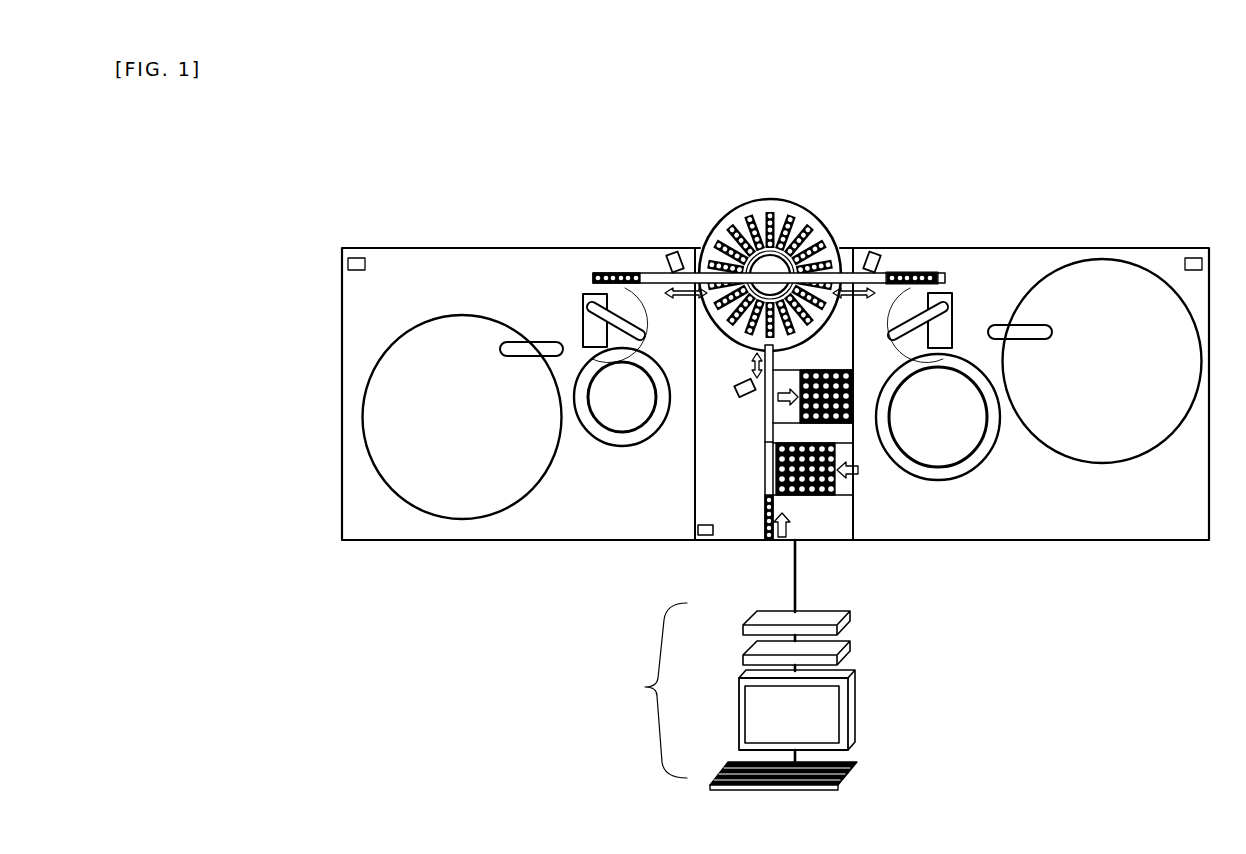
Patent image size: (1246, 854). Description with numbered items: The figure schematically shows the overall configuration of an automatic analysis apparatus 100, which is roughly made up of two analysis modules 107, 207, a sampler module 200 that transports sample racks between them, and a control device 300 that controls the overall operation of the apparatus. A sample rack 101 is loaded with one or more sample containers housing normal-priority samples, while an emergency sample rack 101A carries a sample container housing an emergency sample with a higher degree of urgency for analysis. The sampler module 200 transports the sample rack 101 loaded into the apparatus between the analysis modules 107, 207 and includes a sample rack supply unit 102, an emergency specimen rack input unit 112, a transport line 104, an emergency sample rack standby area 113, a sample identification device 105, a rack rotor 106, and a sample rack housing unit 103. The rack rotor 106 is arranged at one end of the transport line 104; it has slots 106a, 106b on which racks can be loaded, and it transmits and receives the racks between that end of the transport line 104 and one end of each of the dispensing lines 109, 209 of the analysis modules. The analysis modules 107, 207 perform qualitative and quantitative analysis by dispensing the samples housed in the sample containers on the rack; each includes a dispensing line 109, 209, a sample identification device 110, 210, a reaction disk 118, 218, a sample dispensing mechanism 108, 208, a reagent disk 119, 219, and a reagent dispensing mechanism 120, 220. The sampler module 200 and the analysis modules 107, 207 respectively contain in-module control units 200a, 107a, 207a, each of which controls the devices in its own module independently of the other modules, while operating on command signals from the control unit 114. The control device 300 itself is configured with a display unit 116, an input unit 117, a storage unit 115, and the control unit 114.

The automatic analysis apparatus 100 is at (843, 138).
The sampler module 200 is at (730, 203).
The in-module control unit 200a is at (697, 533).
The rack rotor 106 is at (777, 208).
The slot 106a is at (848, 252).
The slot 106b is at (696, 248).
The sample identification device 110 is at (873, 251).
The sample identification device 210 is at (674, 245).
The sample dispensing mechanism 208 is at (604, 274).
The dispensing line 209 is at (641, 332).
The dispensing line 109 is at (890, 270).
The sample dispensing mechanism 108 is at (934, 292).
The reagent dispensing mechanism 120 is at (1005, 325).
The reagent dispensing mechanism 220 is at (522, 343).
The analysis module 107 is at (1142, 248).
The in-module control unit 107a is at (1193, 257).
The analysis module 207 is at (402, 248).
The in-module control unit 207a is at (356, 257).
The sample identification device 105 is at (740, 385).
The transport line 104 is at (766, 403).
The reagent disk 219 is at (460, 519).
The reaction disk 218 is at (610, 446).
The reaction disk 118 is at (940, 481).
The reagent disk 119 is at (1093, 464).
The emergency sample rack standby area 113 is at (765, 477).
The emergency specimen rack input unit 112 is at (760, 523).
The emergency sample rack 101A is at (762, 522).
The sample rack 101 is at (823, 497).
The sample rack supply unit 102 is at (847, 483).
The sample rack housing unit 103 is at (845, 430).
The control device 300 is at (649, 690).
The control unit 114 is at (755, 613).
The storage unit 115 is at (755, 646).
The display unit 116 is at (752, 713).
The input unit 117 is at (720, 764).